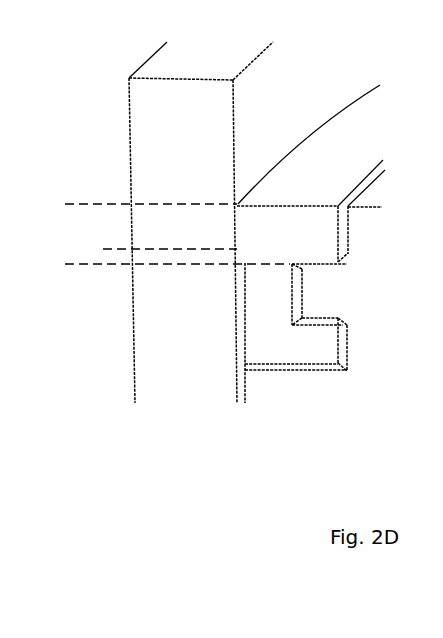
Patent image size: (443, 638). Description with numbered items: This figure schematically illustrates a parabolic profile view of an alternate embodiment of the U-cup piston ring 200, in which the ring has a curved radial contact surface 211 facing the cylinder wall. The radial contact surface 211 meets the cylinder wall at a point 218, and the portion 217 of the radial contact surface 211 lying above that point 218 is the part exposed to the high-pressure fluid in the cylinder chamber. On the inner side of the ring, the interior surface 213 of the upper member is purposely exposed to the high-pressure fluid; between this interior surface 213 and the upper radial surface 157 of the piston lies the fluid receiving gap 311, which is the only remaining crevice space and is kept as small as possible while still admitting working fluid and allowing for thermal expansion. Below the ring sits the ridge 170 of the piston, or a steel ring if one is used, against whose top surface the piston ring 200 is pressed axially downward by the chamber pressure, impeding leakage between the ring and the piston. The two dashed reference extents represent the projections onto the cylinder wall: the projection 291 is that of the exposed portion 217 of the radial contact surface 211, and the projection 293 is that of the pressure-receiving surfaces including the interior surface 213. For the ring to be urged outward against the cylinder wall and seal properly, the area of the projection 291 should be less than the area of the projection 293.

The U-cup piston ring 200 is at (345, 171).
The ridge 170 is at (348, 307).
The upper radial surface of the piston 157 is at (350, 254).
The interior surface 213 is at (348, 227).
The gap 311 is at (407, 147).
The portion of the radial contact surface 217 is at (243, 235).
The point where the radial contact surface meets the cylinder wall 218 is at (242, 237).
The radial contact surface 211 is at (245, 256).
The projection of the exposed portion of the radial contact surface 291 is at (151, 220).
The projection of the pressure-receiving surfaces 293 is at (177, 253).